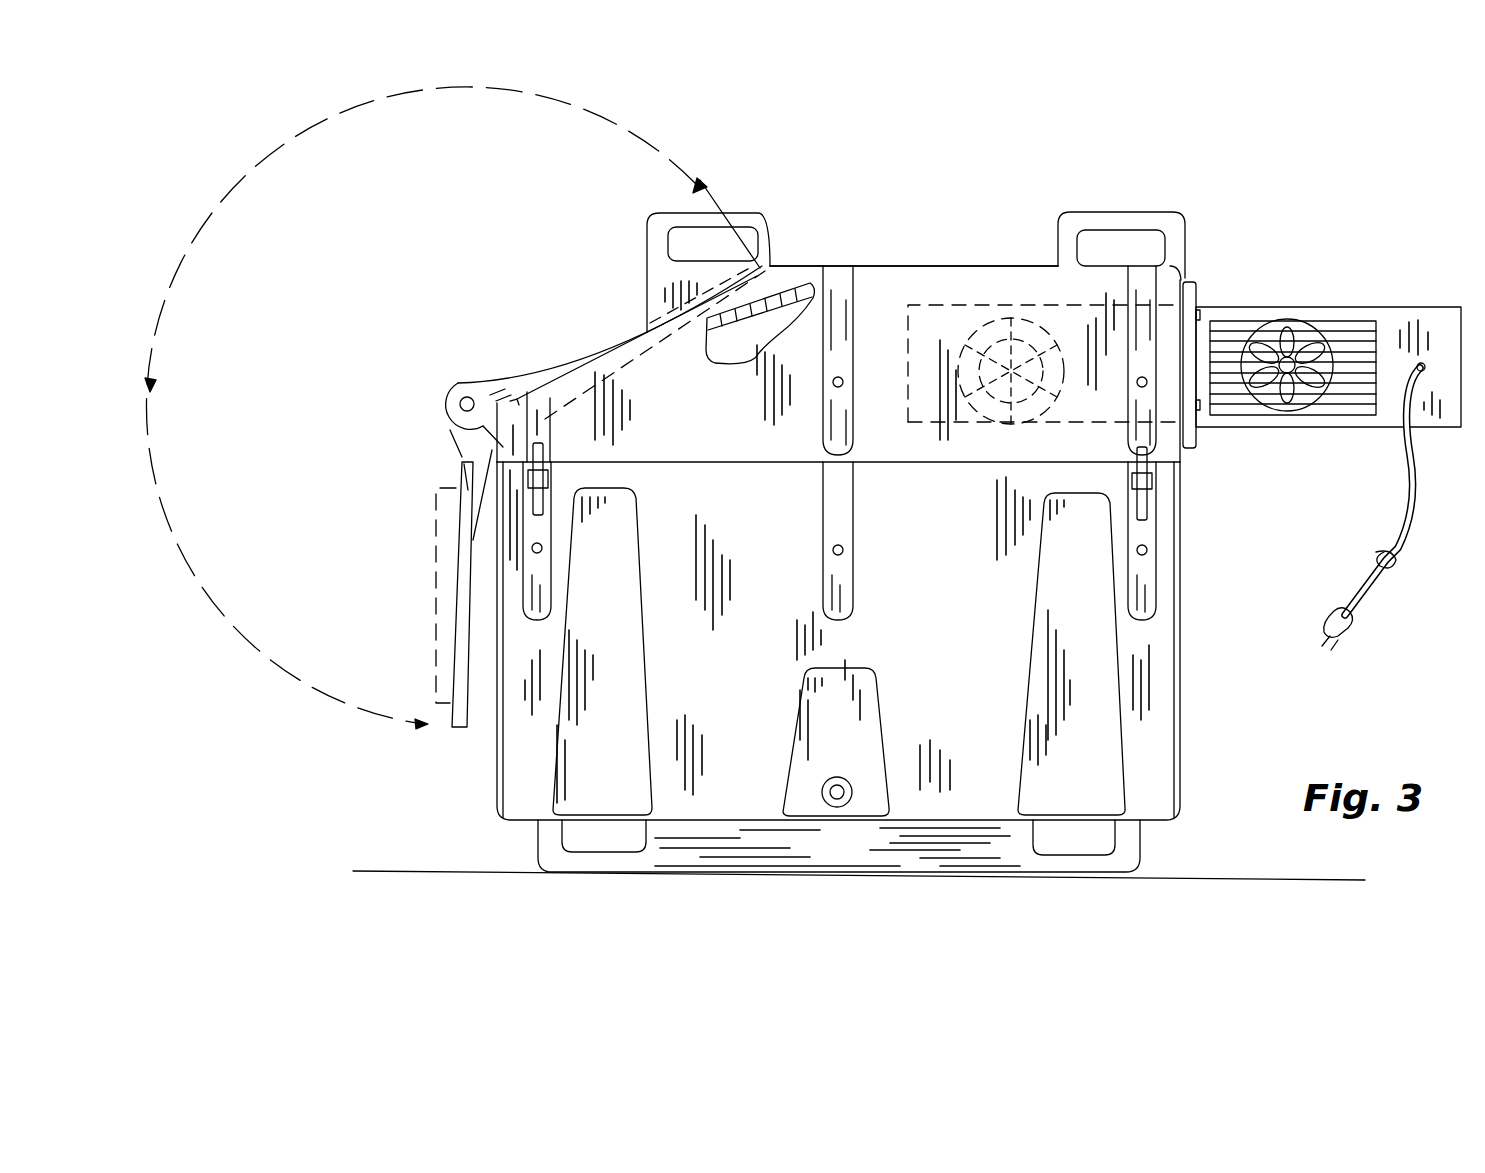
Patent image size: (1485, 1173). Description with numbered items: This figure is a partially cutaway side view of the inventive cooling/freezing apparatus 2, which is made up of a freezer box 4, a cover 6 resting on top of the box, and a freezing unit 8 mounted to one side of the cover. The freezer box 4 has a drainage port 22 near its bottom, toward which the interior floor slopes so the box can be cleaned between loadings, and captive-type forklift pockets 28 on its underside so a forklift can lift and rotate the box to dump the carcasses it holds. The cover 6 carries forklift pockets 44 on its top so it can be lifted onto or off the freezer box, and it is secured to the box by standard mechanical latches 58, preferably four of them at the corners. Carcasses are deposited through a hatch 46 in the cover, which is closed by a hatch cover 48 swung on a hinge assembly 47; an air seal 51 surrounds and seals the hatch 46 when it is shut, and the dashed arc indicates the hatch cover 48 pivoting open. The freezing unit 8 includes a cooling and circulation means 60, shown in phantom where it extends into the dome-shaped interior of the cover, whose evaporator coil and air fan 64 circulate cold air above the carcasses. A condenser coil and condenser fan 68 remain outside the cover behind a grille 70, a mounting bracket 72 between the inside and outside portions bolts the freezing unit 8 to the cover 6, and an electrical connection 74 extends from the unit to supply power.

The freezing apparatus 2 is at (1180, 196).
The freezer box 4 is at (1160, 698).
The cover 6 is at (884, 292).
The freezing unit 8 is at (1442, 328).
The drainage port 22 is at (838, 807).
The captive-type forklift pockets 28 is at (580, 835).
The forklift pockets 44 is at (744, 215).
The hatch 46 is at (588, 355).
The hinge assembly 47 is at (455, 388).
The hatch cover 48 is at (437, 611).
The air seal 51 is at (778, 277).
The mechanical latches 58 is at (542, 457).
The cooling and circulation means 60 is at (920, 414).
The air fan 64 is at (914, 240).
The condenser fan 68 is at (1290, 336).
The grille 70 is at (1346, 343).
The mounting bracket 72 is at (1194, 292).
The electrical connection 74 is at (1406, 484).